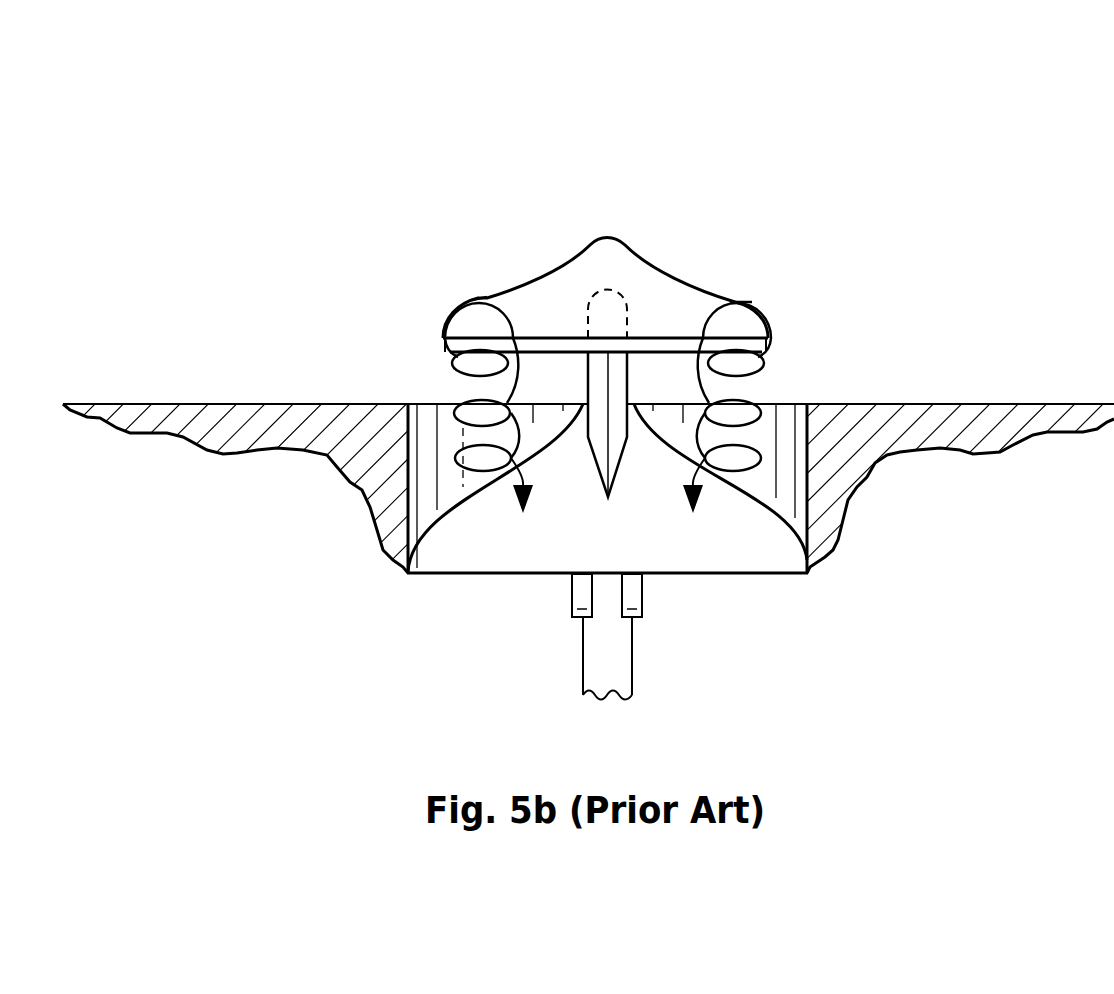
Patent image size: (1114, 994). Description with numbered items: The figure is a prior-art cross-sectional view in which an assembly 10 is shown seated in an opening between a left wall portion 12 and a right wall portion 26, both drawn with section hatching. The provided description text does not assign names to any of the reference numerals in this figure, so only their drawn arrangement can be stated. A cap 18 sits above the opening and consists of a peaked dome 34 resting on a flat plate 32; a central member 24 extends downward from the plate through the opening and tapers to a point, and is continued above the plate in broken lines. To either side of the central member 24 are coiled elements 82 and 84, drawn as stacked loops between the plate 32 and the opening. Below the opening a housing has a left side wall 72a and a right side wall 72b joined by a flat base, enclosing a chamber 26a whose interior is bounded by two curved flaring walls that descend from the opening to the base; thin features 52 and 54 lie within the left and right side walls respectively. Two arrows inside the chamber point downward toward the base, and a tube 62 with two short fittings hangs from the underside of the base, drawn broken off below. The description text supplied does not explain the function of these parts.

The fluid dispensing device 10 is at (608, 452).
The container wall / ground left 12 is at (182, 398).
The cap assembly 18 is at (643, 241).
The needle 24 is at (630, 377).
The container wall / ground right 26 is at (1027, 404).
The housing chamber 26a is at (476, 535).
The cap plate 32 is at (533, 282).
The cap dome 34 is at (652, 272).
The left seal 52 is at (412, 430).
The right seal 54 is at (800, 432).
The outlet tube 62 is at (588, 670).
The left housing wall 72a is at (463, 462).
The right housing wall 72b is at (745, 470).
The left spring 82 is at (460, 318).
The right spring 84 is at (762, 318).